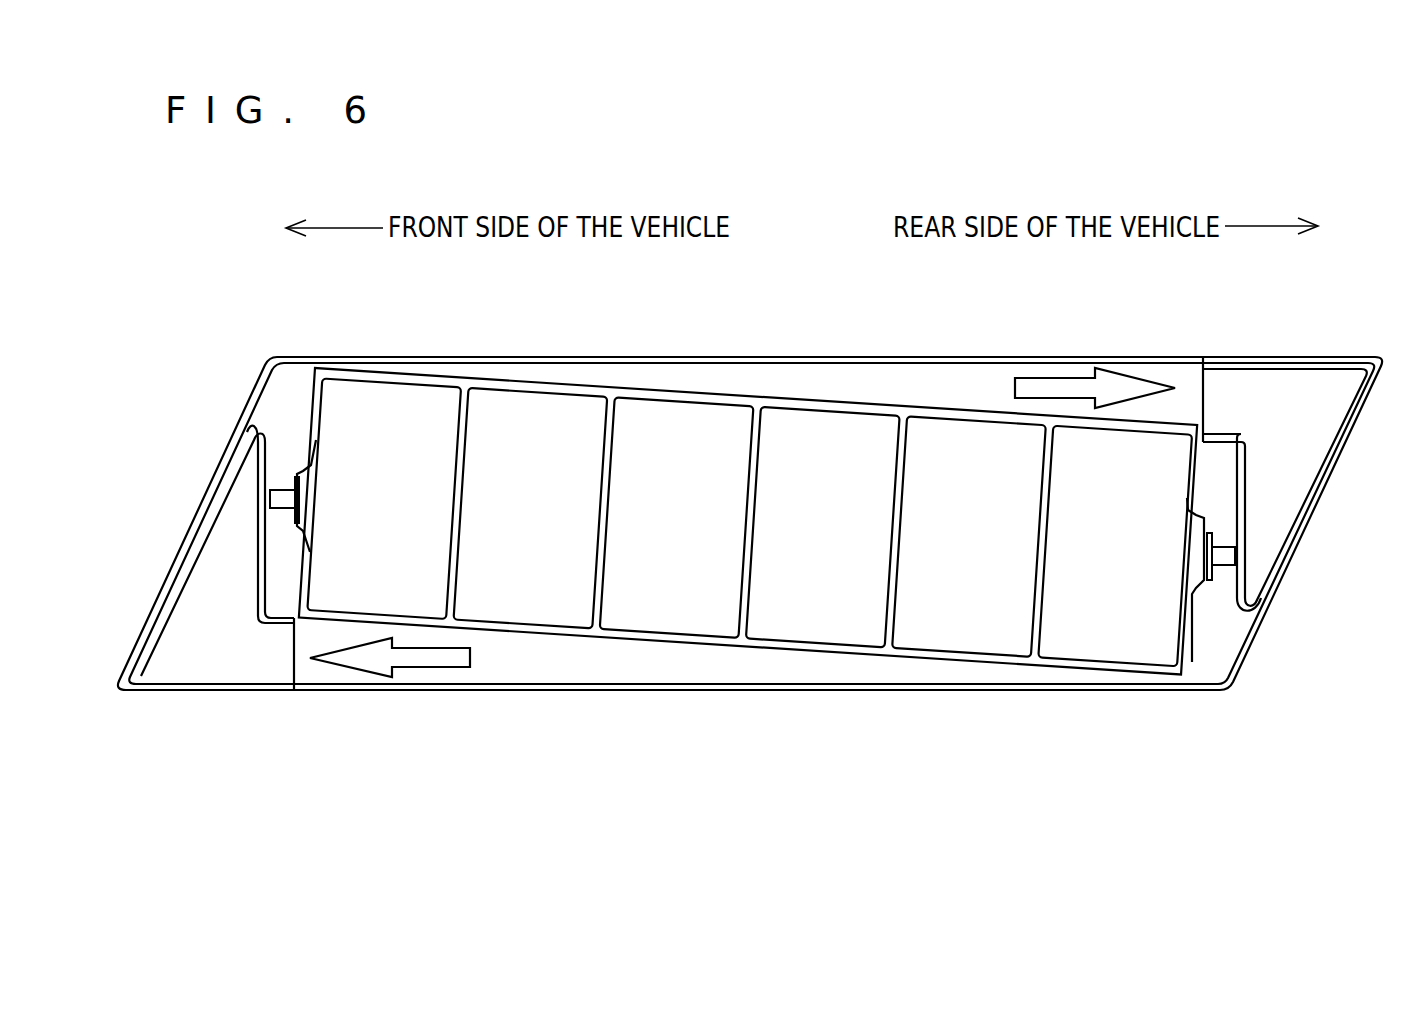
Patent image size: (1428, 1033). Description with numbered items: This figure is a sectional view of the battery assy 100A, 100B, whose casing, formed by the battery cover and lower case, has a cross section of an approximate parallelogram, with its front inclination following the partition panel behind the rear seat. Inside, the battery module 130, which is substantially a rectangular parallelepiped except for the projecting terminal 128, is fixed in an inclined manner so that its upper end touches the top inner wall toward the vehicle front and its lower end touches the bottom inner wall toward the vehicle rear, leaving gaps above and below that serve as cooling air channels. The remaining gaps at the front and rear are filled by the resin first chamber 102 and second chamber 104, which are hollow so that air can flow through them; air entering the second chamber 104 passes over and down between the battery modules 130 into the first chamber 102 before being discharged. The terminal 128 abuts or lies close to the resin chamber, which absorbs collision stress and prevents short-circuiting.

The battery assy 100A is at (750, 479).
The battery assy 100B is at (713, 357).
The first chamber 102 is at (215, 643).
The second chamber 104 is at (1282, 465).
The terminal 128 is at (283, 492).
The battery module 130 is at (675, 642).